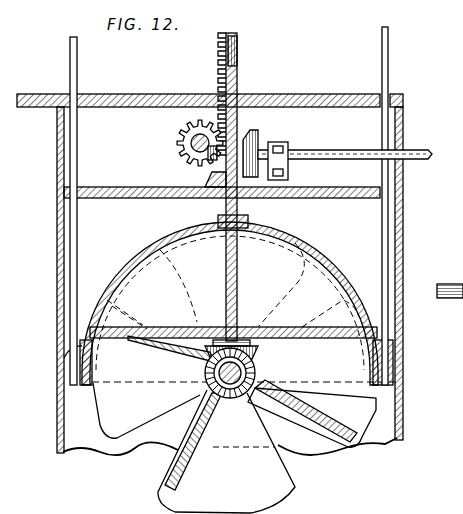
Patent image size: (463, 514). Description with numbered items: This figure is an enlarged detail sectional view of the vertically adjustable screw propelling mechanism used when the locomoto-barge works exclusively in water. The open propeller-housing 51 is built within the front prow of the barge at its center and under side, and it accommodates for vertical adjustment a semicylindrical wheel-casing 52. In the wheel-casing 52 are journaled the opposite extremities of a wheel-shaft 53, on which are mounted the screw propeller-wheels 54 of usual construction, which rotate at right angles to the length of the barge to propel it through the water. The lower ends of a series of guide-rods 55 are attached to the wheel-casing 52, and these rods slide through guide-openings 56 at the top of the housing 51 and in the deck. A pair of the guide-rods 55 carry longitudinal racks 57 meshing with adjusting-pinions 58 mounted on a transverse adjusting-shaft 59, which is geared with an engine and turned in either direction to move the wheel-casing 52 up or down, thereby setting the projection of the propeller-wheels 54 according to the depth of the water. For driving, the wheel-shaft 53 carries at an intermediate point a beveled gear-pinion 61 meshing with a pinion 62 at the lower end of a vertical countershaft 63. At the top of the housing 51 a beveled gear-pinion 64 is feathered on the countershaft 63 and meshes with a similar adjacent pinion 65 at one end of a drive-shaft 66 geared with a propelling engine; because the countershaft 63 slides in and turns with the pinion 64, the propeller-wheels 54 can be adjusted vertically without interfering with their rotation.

The propeller-housing 51 is at (244, 280).
The wheel-casing 52 is at (167, 243).
The wheel-shaft 53 is at (257, 367).
The screw propeller-wheels 54 is at (108, 358).
The guide-rods 55 is at (77, 159).
The guide-openings 56 is at (78, 100).
The longitudinal racks 57 is at (240, 48).
The adjusting-pinions 58 is at (183, 132).
The adjusting-shaft 59 is at (192, 150).
The beveled gear-pinion 61 is at (237, 400).
The pinion 62 is at (211, 354).
The vertical countershaft 63 is at (239, 79).
The beveled gear-pinion 64 is at (209, 176).
The pinion 65 is at (253, 140).
The drive-shaft 66 is at (332, 144).